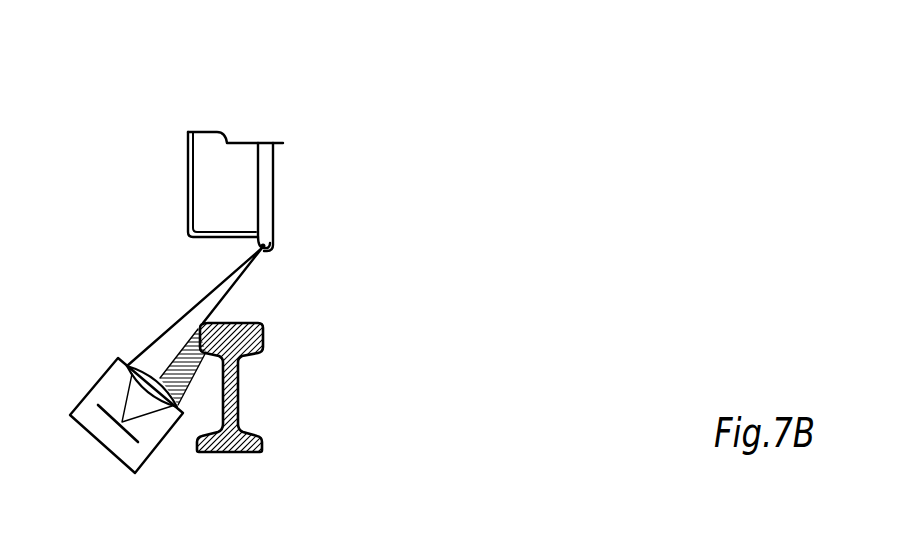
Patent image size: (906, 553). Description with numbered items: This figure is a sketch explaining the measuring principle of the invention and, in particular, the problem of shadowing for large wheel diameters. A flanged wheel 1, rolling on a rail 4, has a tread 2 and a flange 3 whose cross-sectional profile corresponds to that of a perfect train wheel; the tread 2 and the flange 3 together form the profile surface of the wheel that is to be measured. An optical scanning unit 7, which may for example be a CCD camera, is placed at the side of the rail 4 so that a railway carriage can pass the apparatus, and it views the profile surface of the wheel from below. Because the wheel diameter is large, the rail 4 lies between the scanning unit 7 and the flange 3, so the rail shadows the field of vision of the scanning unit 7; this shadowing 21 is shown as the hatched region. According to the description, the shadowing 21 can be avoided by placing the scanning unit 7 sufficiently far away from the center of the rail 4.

The flanged wheel 1 is at (208, 165).
The tread 2 is at (212, 231).
The flange 3 is at (259, 246).
The rail 4 is at (238, 386).
The optical scanning unit 7 is at (83, 372).
The shadowing 21 is at (178, 353).